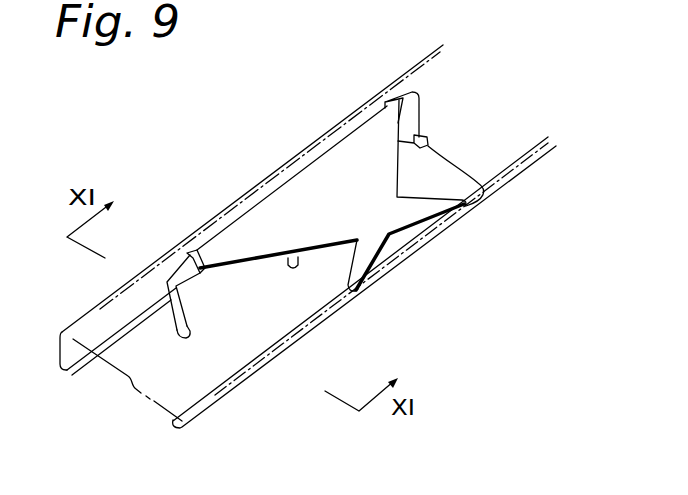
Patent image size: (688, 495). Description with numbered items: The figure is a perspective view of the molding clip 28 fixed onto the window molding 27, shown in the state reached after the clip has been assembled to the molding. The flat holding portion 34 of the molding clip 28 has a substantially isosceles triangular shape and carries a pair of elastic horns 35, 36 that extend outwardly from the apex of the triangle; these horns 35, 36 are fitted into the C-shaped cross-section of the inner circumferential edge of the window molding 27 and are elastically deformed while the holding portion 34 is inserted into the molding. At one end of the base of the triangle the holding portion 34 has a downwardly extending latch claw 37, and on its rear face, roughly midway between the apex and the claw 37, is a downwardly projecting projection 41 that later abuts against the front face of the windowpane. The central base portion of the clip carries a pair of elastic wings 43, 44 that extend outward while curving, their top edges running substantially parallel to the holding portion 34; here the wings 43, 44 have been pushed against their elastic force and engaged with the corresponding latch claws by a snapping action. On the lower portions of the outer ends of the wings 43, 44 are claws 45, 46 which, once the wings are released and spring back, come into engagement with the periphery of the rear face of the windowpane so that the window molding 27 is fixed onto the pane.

The window molding 27 is at (101, 309).
The molding clip 28 is at (309, 160).
The holding portion 34 is at (254, 212).
The elastic horn 35 is at (356, 286).
The elastic horn 36 is at (447, 205).
The latch claw 37 is at (196, 246).
The projection 41 is at (300, 262).
The elastic wing 43 is at (200, 290).
The elastic wing 44 is at (401, 96).
The claw 45 is at (186, 316).
The claw 46 is at (478, 183).